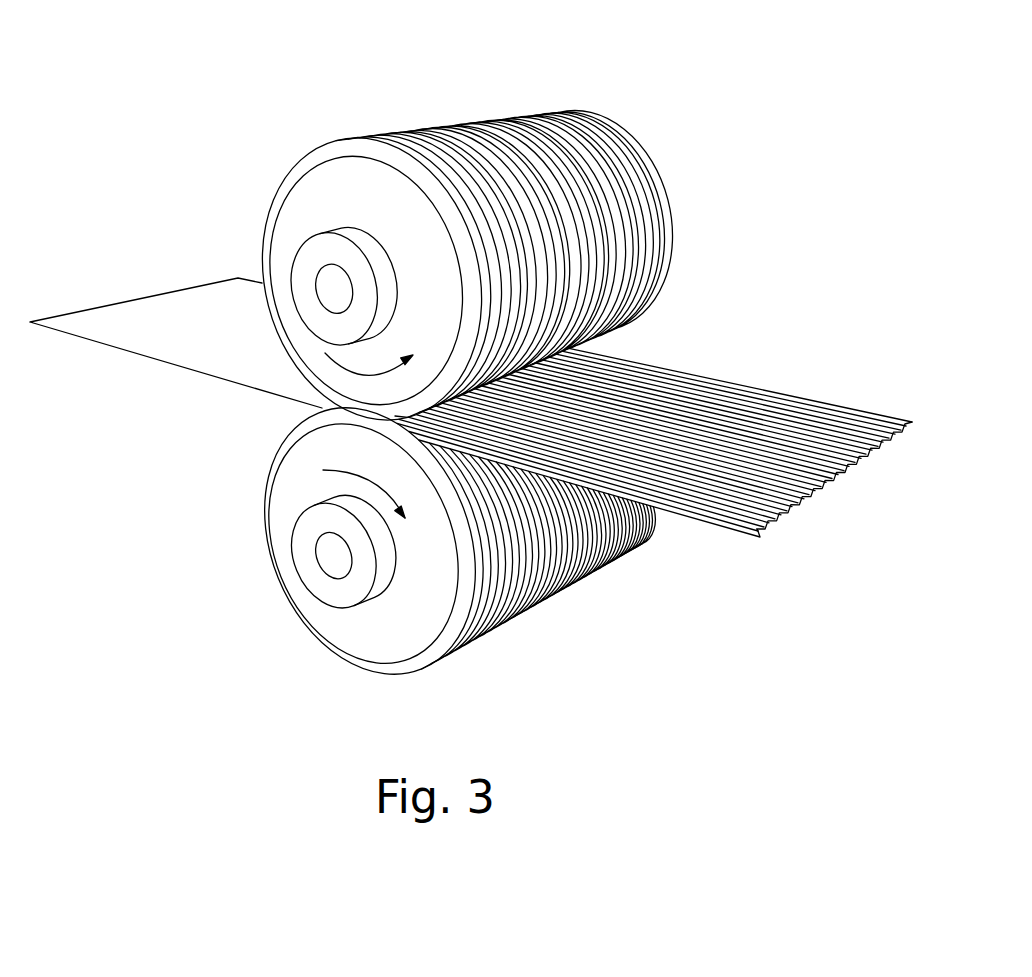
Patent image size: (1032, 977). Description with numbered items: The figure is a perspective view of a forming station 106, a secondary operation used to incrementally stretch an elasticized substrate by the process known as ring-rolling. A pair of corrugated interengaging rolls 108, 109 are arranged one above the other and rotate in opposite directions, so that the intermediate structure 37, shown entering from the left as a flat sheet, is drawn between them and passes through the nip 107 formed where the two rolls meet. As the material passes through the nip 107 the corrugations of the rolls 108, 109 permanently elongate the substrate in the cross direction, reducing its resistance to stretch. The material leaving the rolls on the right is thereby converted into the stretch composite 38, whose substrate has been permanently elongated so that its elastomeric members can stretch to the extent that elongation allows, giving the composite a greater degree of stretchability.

The forming station 106 is at (435, 360).
The corrugated interengaging roll 108 is at (290, 210).
The corrugated interengaging roll 109 is at (328, 620).
The nip 107 is at (305, 410).
The intermediate structure 37 is at (238, 341).
The stretch composite 38 is at (700, 420).